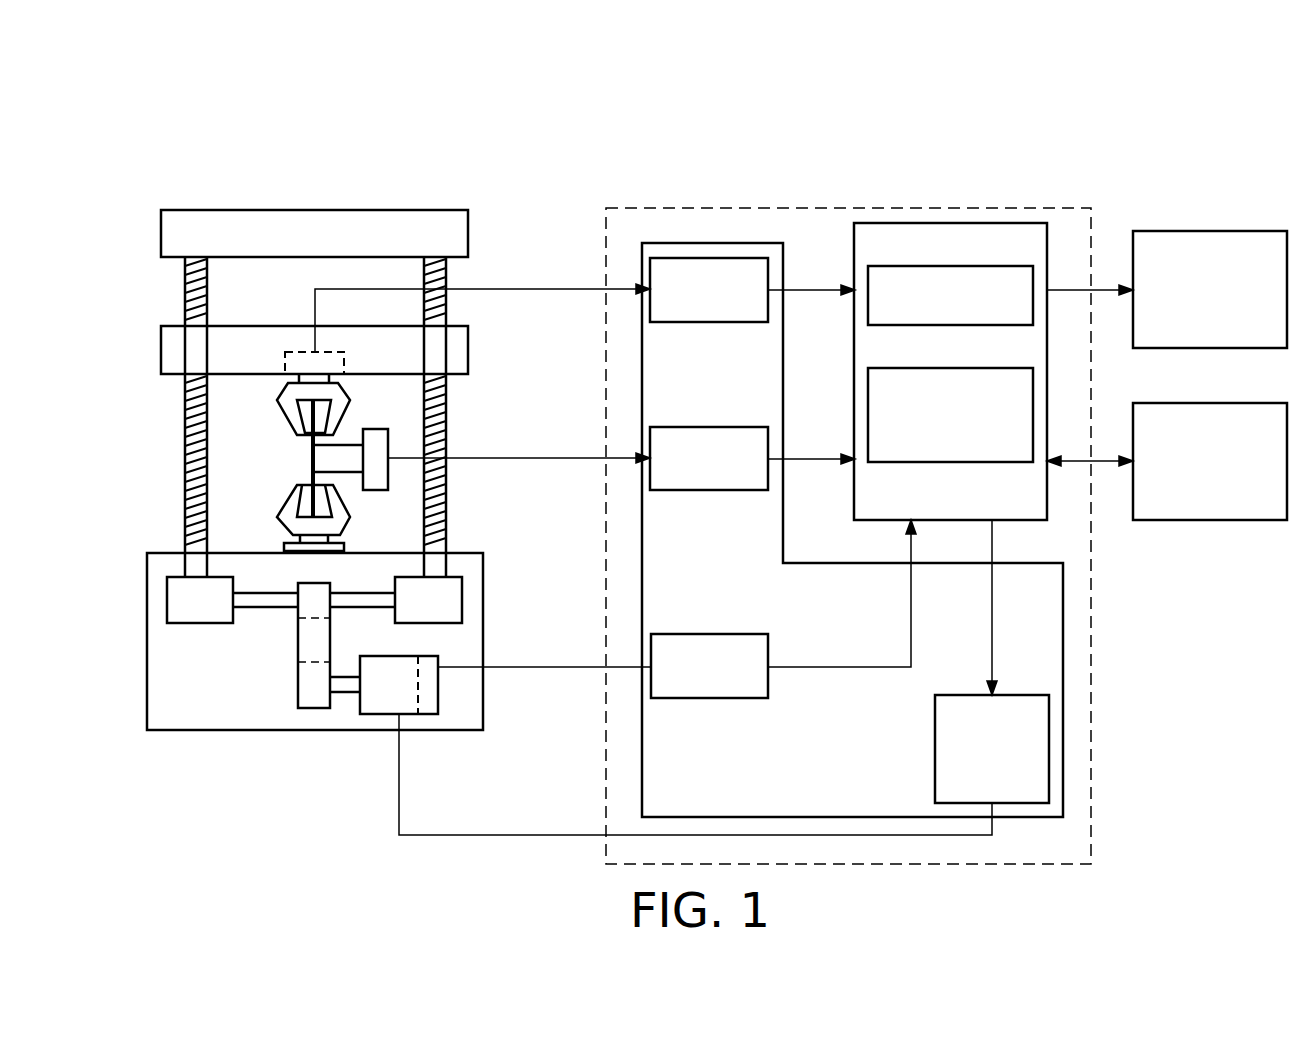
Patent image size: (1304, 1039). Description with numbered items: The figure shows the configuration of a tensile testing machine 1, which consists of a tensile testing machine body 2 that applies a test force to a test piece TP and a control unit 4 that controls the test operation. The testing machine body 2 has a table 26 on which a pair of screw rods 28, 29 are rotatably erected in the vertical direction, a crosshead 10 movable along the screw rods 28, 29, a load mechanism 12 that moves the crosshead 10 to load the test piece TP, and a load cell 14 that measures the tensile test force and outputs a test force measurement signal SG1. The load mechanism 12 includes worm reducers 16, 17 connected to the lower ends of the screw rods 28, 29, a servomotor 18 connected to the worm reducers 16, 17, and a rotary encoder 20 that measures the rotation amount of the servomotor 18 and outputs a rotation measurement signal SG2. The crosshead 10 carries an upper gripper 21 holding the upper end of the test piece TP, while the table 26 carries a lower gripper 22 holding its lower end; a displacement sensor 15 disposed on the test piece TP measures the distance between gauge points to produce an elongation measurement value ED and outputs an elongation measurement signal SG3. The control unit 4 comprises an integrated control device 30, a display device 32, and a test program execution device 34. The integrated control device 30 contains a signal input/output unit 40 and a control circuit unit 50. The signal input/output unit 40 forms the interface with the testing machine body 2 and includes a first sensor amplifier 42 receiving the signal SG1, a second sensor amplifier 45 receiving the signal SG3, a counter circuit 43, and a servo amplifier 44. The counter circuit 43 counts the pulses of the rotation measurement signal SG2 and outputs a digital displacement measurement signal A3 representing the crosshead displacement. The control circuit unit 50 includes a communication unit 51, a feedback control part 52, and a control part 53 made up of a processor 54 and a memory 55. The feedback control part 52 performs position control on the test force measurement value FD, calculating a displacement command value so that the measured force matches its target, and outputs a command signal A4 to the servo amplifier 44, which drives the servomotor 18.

The tensile testing machine 1 is at (660, 95).
The tensile testing machine body 2 is at (353, 185).
The control unit 4 is at (1177, 127).
The crosshead 10 is at (161, 347).
The load mechanism 12 is at (290, 766).
The load cell 14 is at (300, 362).
The displacement sensor 15 is at (376, 429).
The worm reducer 16 is at (208, 613).
The worm reducer 17 is at (445, 606).
The servomotor 18 is at (381, 707).
The rotary encoder 20 is at (438, 682).
The upper gripper 21 is at (293, 410).
The lower gripper 22 is at (335, 522).
The table 26 is at (157, 696).
The screw rod 28 is at (185, 494).
The screw rod 29 is at (446, 500).
The integrated control device 30 is at (843, 208).
The display device 32 is at (1170, 246).
The test program execution device 34 is at (1192, 505).
The signal input/output unit 40 is at (716, 243).
The first sensor amplifier 42 is at (703, 308).
The counter circuit 43 is at (725, 675).
The servo amplifier 44 is at (946, 761).
The second sensor amplifier 45 is at (703, 478).
The control circuit unit 50 is at (943, 232).
The communication unit 51 is at (944, 266).
The feedback control part 52 is at (944, 368).
The control part 53 is at (950, 329).
The processor 54 is at (950, 329).
The memory 55 is at (950, 329).
The test piece TP is at (311, 458).
The test force measurement signal SG1 is at (553, 289).
The rotation measurement signal SG2 is at (517, 667).
The elongation measurement signal SG3 is at (553, 458).
The test force measurement value FD is at (822, 289).
The elongation measurement value ED is at (822, 459).
The displacement measurement signal A3 is at (910, 612).
The command signal A4 is at (993, 657).